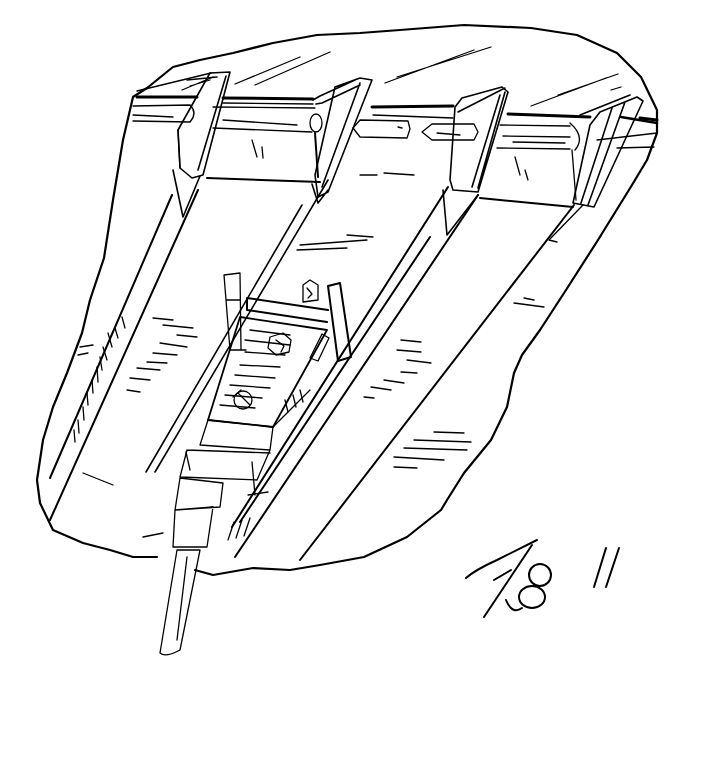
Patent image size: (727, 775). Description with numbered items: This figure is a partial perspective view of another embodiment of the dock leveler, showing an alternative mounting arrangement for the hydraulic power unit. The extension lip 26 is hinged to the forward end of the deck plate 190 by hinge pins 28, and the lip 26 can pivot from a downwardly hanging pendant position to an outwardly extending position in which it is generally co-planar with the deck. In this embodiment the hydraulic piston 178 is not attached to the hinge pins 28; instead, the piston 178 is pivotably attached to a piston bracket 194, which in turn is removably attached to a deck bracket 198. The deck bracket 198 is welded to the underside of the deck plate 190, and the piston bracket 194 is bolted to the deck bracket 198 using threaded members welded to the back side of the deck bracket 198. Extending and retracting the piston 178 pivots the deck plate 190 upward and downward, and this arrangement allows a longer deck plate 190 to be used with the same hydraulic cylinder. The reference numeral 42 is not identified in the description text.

The extension lip 26 is at (582, 63).
The hinge pins 28 is at (491, 72).
The rails 42 is at (240, 249).
The deck plate 190 is at (392, 222).
The piston bracket 194 is at (343, 307).
The deck bracket 198 is at (315, 282).
The hydraulic piston 178 is at (172, 627).